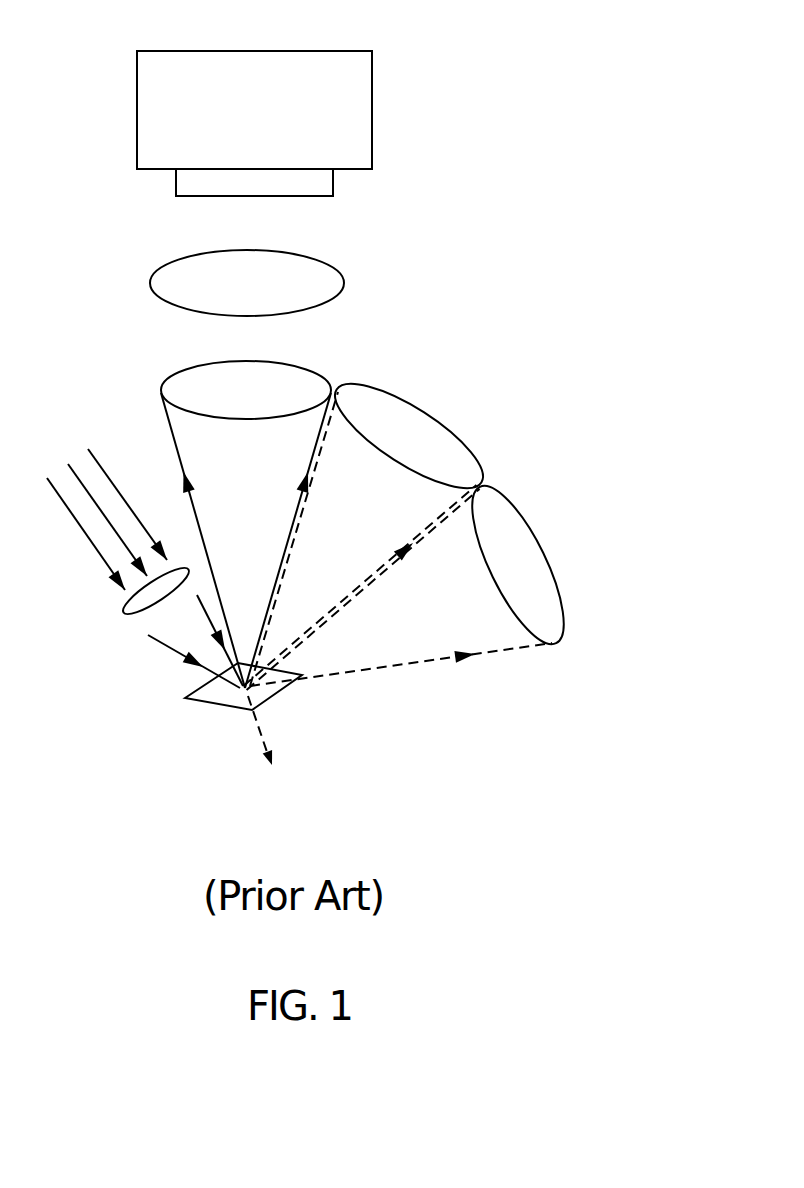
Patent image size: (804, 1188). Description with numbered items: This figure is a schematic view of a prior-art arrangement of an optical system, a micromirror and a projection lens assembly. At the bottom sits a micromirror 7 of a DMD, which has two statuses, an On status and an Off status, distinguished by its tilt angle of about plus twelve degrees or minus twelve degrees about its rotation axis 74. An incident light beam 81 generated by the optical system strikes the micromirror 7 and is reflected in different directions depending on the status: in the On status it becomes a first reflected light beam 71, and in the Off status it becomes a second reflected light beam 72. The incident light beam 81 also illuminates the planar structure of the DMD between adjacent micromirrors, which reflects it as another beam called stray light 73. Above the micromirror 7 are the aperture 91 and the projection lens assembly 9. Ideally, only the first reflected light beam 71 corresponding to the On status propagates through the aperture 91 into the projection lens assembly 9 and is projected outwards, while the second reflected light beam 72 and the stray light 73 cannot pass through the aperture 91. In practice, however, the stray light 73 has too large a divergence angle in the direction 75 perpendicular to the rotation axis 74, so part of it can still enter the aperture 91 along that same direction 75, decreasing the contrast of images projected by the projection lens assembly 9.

The projection lens assembly 9 is at (352, 91).
The aperture 91 is at (311, 275).
The first reflected light beam 71 is at (193, 382).
The stray light 73 is at (420, 433).
The second reflected light beam 72 is at (505, 630).
The incident light beam 81 is at (63, 507).
The micromirror 7 is at (232, 711).
The rotation axis 74 is at (182, 700).
The direction 75 is at (258, 735).